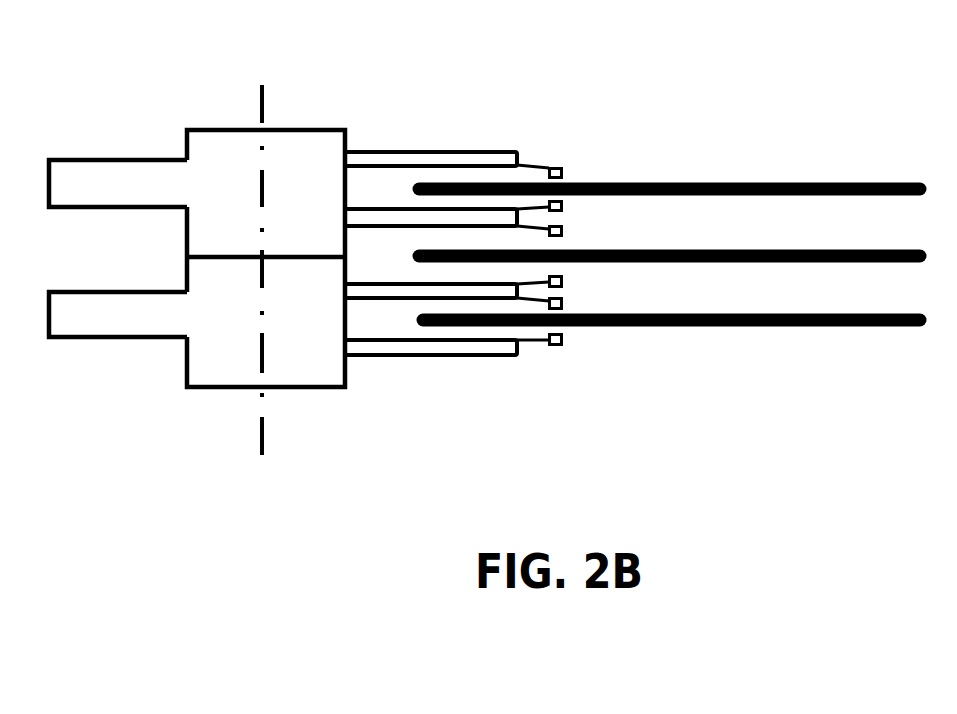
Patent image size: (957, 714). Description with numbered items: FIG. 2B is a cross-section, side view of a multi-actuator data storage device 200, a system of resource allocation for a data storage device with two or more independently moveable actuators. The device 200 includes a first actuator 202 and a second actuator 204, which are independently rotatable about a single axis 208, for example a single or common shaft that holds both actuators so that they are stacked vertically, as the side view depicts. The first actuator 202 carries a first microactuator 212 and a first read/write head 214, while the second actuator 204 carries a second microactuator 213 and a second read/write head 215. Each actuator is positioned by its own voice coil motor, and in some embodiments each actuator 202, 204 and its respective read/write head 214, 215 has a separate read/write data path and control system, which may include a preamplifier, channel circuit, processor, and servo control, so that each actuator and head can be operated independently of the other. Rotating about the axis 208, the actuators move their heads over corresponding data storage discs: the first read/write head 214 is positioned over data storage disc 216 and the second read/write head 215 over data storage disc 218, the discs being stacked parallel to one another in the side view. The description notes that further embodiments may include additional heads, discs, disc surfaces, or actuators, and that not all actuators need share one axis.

The multi-actuator data storage device 200 is at (497, 66).
The first actuator 202 is at (130, 160).
The second actuator 204 is at (120, 338).
The single axis 208 is at (262, 437).
The first microactuator 212 is at (517, 166).
The second microactuator 213 is at (519, 352).
The first read/write head 214 is at (560, 166).
The second read/write head 215 is at (567, 344).
The data storage disc 216 is at (853, 182).
The data storage disc 218 is at (875, 327).